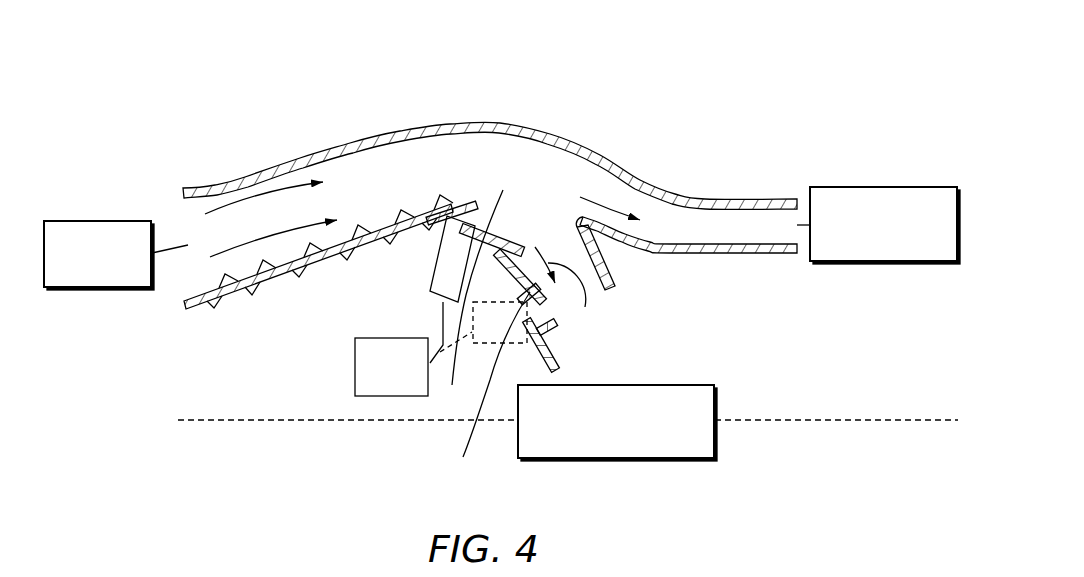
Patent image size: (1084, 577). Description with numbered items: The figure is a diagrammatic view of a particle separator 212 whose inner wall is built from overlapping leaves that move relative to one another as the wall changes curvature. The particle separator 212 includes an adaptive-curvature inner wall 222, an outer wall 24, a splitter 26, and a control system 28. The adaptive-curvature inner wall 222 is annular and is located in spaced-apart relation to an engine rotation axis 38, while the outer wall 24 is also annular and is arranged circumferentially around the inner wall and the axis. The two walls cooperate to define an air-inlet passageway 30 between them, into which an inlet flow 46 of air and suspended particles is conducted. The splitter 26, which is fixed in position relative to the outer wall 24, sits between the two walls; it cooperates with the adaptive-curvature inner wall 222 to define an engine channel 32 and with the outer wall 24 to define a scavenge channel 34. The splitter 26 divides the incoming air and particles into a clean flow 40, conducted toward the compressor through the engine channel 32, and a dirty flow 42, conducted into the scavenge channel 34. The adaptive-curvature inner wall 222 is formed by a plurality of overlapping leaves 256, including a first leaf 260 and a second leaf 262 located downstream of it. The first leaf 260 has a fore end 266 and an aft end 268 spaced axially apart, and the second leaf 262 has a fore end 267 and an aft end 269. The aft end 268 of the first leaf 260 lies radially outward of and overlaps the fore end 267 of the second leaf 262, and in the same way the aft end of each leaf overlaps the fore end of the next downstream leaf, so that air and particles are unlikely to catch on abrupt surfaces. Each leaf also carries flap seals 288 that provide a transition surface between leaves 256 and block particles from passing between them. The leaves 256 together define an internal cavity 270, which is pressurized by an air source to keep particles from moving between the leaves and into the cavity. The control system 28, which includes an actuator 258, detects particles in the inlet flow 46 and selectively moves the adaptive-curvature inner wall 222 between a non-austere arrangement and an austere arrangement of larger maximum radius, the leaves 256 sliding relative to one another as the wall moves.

The particle separator 212 is at (188, 145).
The outer wall 24 is at (538, 122).
The inlet flow 46 is at (267, 200).
The air-inlet passageway 30 is at (95, 221).
The internal cavity 270 is at (240, 320).
The adaptive-curvature inner wall 222 is at (390, 210).
The flap seals 288 is at (373, 226).
The plurality of overlapping leaves 256 is at (435, 205).
The fore end of the first leaf 266 is at (481, 204).
The aft end of the first leaf 268 is at (515, 227).
The first leaf 260 is at (487, 276).
The second leaf 262 is at (536, 257).
The actuator 258 is at (440, 252).
The control system 28 is at (355, 363).
The engine rotation axis 38 is at (292, 420).
The fore end of the second leaf 267 is at (468, 303).
The aft end of the second leaf 269 is at (486, 387).
The clean flow 40 is at (617, 383).
The dirty flow 42 is at (607, 207).
The splitter 26 is at (617, 257).
The scavenge channel 34 is at (862, 187).
The engine channel 32 is at (660, 385).